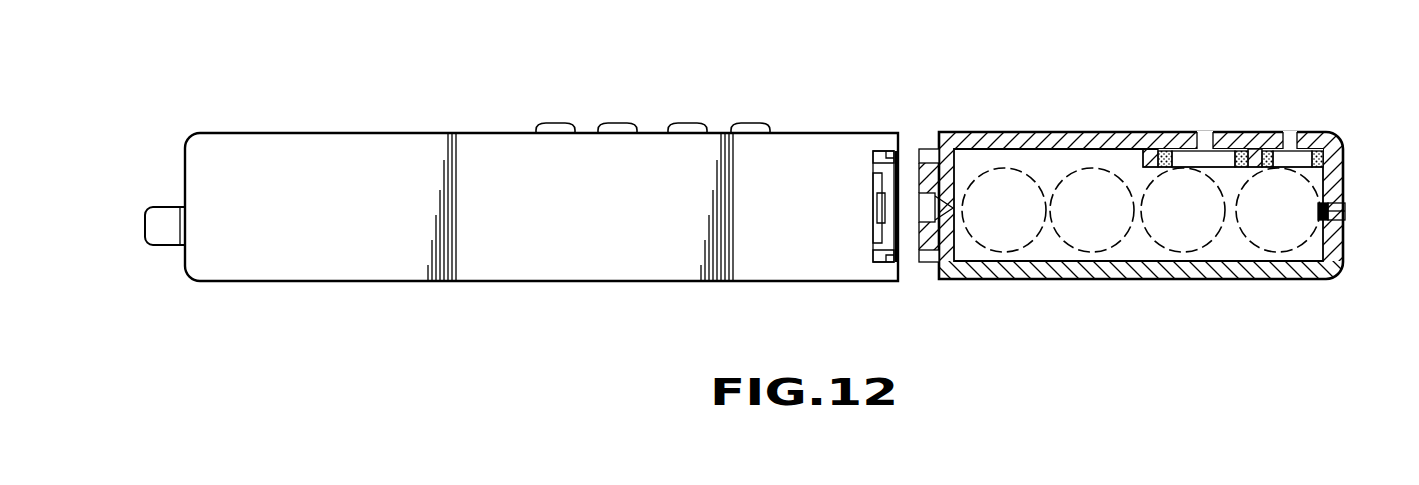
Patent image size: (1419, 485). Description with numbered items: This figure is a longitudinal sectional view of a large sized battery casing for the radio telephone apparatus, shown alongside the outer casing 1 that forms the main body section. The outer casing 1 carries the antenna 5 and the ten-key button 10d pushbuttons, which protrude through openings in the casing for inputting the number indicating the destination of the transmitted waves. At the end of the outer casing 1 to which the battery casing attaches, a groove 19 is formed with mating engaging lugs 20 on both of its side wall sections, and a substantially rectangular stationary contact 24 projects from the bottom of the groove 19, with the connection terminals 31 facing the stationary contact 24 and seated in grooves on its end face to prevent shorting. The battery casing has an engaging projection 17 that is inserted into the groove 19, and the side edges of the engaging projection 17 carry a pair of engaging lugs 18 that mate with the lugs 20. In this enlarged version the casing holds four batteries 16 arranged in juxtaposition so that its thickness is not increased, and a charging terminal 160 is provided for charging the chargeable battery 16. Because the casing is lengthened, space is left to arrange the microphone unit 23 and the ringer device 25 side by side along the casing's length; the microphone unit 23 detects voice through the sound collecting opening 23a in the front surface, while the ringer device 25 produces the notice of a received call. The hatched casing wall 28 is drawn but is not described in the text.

The outer casing 1 is at (245, 257).
The antenna 5 is at (162, 238).
The ten-key button 10d is at (750, 128).
The battery 16 is at (1012, 217).
The engaging projection 17 is at (914, 250).
The engaging lugs 18 is at (928, 155).
The groove 19 is at (898, 160).
The mating engaging lugs 20 is at (883, 152).
The microphone unit 23 is at (1275, 157).
The sound collecting opening 23a is at (1290, 145).
The stationary contact 24 is at (873, 208).
The ringer device 25 is at (1188, 155).
The battery case 28 is at (1020, 133).
The connection terminals 31 is at (875, 237).
The charging terminal 160 is at (1346, 208).